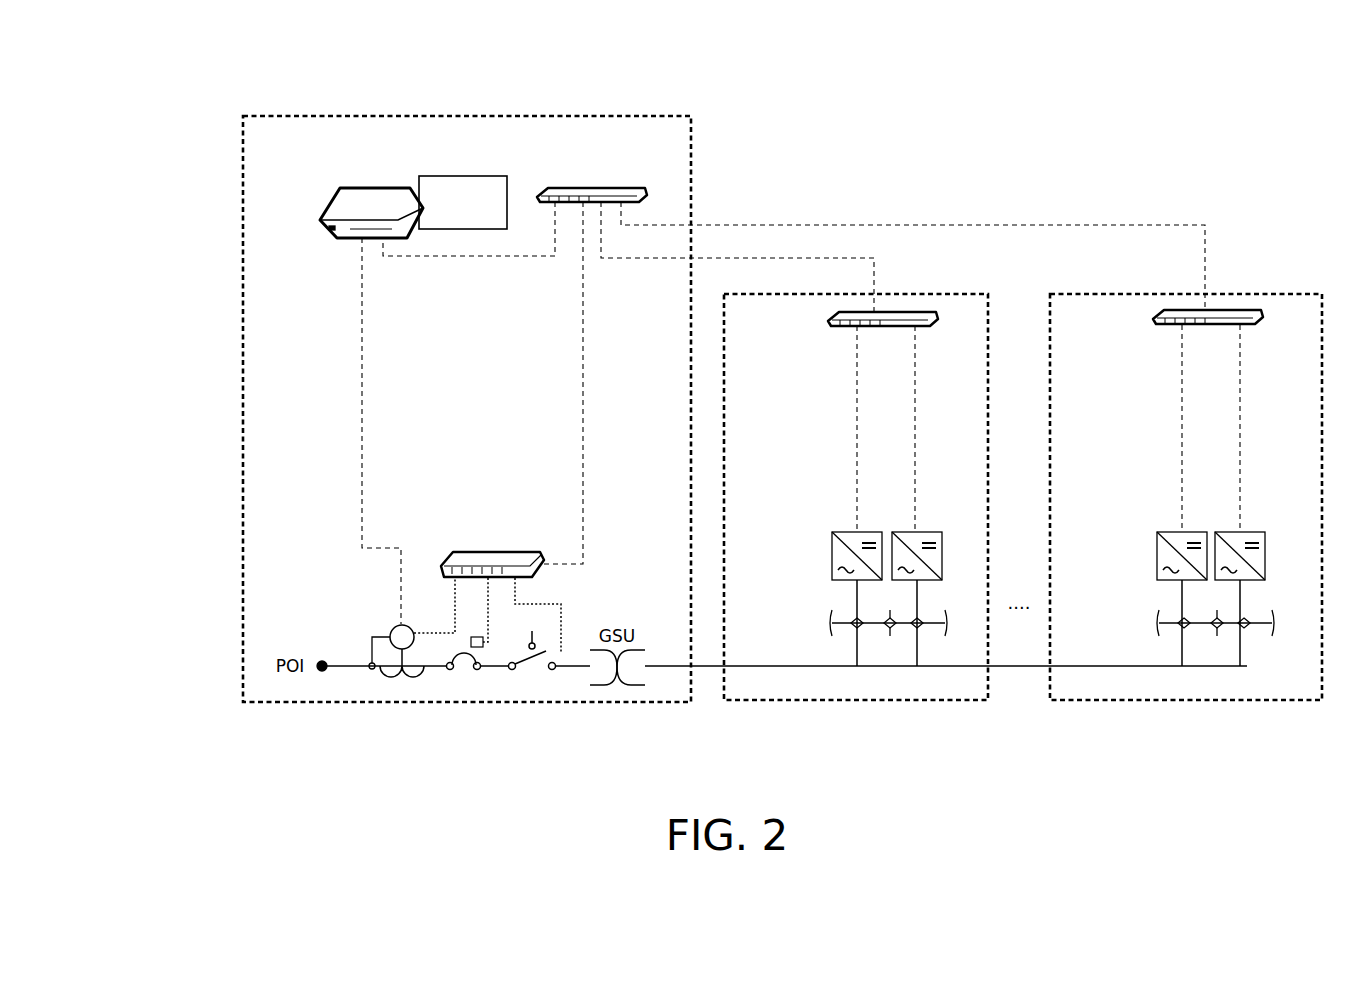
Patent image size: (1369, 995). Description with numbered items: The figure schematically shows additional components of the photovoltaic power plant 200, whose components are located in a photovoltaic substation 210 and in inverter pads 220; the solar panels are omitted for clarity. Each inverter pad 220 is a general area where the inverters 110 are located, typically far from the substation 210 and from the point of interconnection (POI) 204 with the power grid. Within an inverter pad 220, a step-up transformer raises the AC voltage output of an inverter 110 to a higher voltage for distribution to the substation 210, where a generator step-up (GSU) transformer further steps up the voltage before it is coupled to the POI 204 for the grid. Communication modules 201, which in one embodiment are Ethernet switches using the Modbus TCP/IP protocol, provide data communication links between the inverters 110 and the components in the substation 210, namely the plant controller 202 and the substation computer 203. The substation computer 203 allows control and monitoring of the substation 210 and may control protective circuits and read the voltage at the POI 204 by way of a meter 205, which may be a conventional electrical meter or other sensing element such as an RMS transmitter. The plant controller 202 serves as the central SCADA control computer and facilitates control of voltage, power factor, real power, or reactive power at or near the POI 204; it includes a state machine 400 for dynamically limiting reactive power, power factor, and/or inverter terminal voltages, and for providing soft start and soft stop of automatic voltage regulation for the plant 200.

The photovoltaic power plant 200 is at (1185, 118).
The photovoltaic substation 210 is at (348, 116).
The plant controller 202 is at (322, 205).
The state machine 400 is at (497, 176).
The communication module 201 is at (612, 188).
The substation computer 203 is at (448, 552).
The meter 205 is at (394, 625).
The point of interconnection (POI) 204 is at (322, 672).
The inverter pad 220 is at (960, 702).
The inverter 110 is at (845, 531).